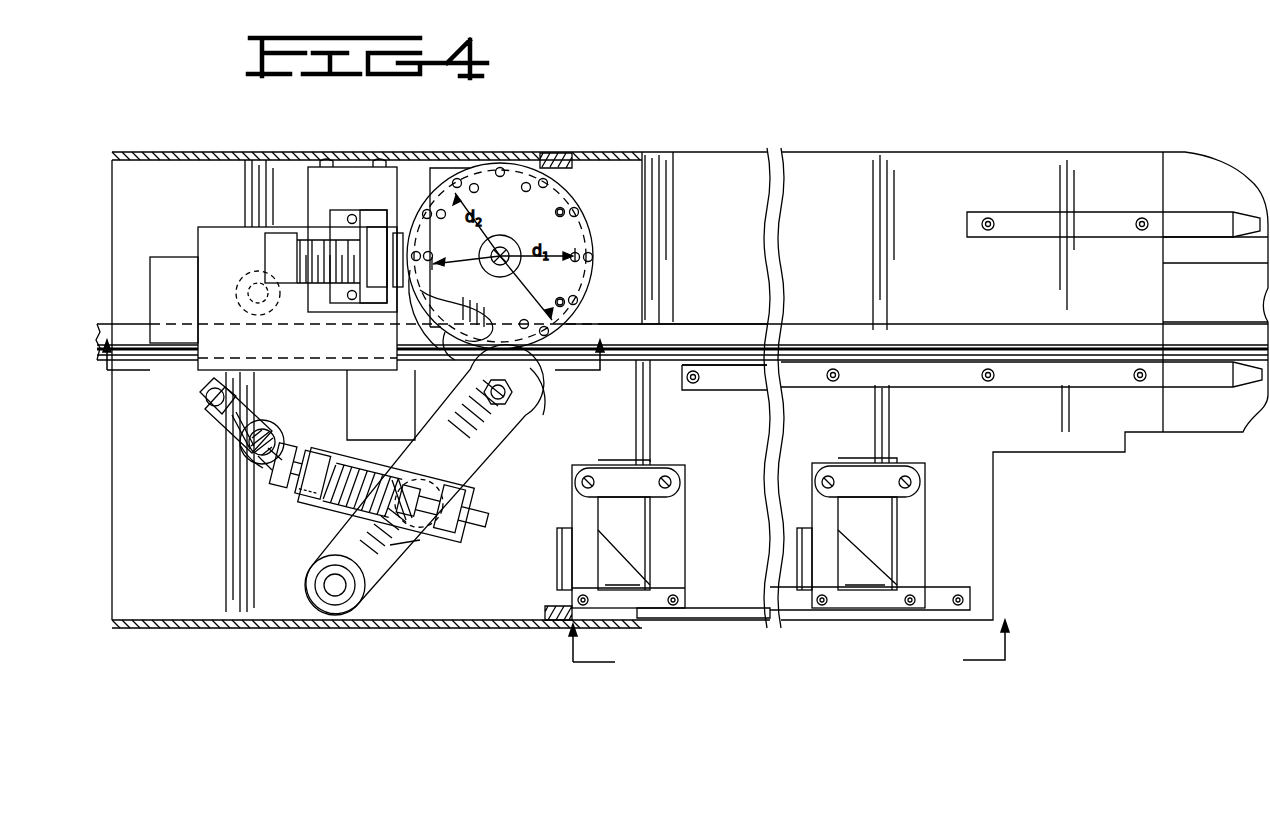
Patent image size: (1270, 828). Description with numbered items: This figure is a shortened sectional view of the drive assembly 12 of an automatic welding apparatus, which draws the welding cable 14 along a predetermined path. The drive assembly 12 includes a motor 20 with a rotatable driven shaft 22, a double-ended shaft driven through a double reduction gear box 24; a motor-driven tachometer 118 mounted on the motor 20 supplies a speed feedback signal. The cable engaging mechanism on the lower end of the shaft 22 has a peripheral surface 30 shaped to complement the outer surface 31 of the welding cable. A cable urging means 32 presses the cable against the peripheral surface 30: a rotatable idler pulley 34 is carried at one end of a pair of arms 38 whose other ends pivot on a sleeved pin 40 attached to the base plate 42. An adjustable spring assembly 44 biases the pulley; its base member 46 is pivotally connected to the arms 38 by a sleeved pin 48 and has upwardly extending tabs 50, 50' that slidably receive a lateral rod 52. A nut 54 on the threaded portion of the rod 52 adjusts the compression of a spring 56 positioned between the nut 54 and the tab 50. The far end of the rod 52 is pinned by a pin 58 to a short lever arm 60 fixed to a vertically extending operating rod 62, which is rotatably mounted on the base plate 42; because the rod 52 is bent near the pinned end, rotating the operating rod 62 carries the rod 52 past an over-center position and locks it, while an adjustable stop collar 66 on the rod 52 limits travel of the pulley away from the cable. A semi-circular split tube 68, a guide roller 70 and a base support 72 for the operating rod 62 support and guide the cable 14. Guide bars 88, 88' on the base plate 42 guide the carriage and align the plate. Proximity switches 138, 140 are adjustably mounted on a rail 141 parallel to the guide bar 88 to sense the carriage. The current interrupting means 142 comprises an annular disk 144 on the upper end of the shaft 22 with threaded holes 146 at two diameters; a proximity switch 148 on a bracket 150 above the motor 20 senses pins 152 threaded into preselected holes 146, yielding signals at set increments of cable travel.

The drive assembly 12 is at (465, 642).
The welding cable 14 is at (922, 330).
The motor 20 is at (222, 226).
The driven shaft 22 is at (494, 254).
The double reduction gear box 24 is at (446, 172).
The peripheral surface 30 is at (455, 348).
The outer surface of the welding cable 31 is at (548, 385).
The cable urging means 32 is at (410, 570).
The idler pulley 34 is at (527, 415).
The arm 38 is at (425, 479).
The sleeved pin 40 is at (338, 592).
The base plate 42 is at (724, 408).
The adjustable spring assembly 44 is at (378, 508).
The base member 46 is at (432, 562).
The sleeved pin 48 is at (419, 503).
The tab 50 is at (313, 474).
The tab 50' is at (452, 509).
The lateral rod 52 is at (258, 462).
The nut 54 is at (420, 515).
The spring 56 is at (363, 490).
The pin 58 is at (205, 404).
The short lever arm 60 is at (242, 412).
The operating rod 62 is at (270, 432).
The adjustable stop collar 66 is at (322, 505).
The semi-circular split tube 68 is at (381, 405).
The guide roller 70 is at (249, 283).
The base support 72 is at (270, 425).
The guide bar 88 is at (972, 398).
The guide bar 88' is at (1113, 204).
The tachometer 118 is at (170, 262).
The first proximity switch 138 is at (883, 534).
The second proximity switch 140 is at (663, 539).
The rail 141 is at (790, 600).
The current interrupting means 142 is at (427, 168).
The annular disk 144 is at (502, 252).
The threaded holes 146 is at (566, 298).
The proximity switch 148 is at (283, 240).
The bracket 150 is at (378, 208).
The pins 152 is at (395, 312).